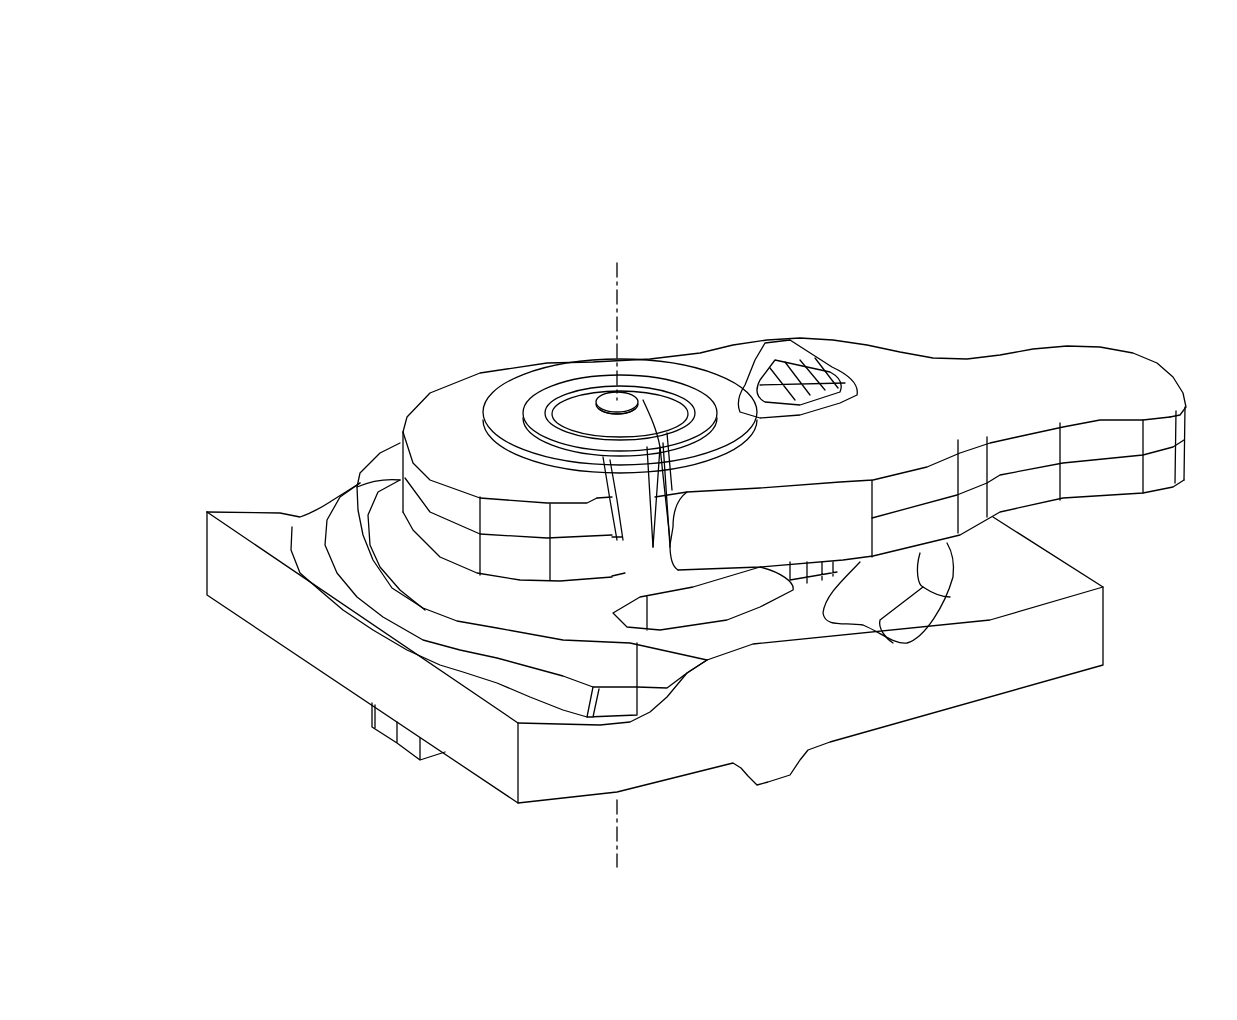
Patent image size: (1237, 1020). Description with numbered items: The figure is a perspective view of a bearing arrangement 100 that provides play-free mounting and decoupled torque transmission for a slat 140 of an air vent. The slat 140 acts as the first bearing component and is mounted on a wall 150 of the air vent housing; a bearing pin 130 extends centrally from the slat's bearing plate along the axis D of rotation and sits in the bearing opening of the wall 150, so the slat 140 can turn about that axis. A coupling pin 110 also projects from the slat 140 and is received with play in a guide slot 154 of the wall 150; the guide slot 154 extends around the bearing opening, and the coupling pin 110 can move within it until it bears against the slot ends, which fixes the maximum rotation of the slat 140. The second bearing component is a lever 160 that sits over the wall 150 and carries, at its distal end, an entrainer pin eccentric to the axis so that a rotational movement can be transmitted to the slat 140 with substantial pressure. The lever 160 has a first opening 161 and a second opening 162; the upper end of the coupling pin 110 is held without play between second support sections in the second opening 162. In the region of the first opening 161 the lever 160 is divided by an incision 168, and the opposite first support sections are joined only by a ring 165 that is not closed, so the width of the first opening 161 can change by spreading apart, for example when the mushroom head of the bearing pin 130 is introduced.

The bearing arrangement 100 is at (1075, 180).
The coupling pin 110 is at (782, 372).
The bearing pin 130 is at (605, 414).
The slat 140 is at (431, 781).
The wall 150 is at (1068, 647).
The guide slot 154 is at (780, 595).
The lever 160 is at (1108, 312).
The first opening 161 is at (675, 412).
The second opening 162 is at (814, 373).
The ring 165 is at (518, 405).
The incision 168 is at (628, 520).